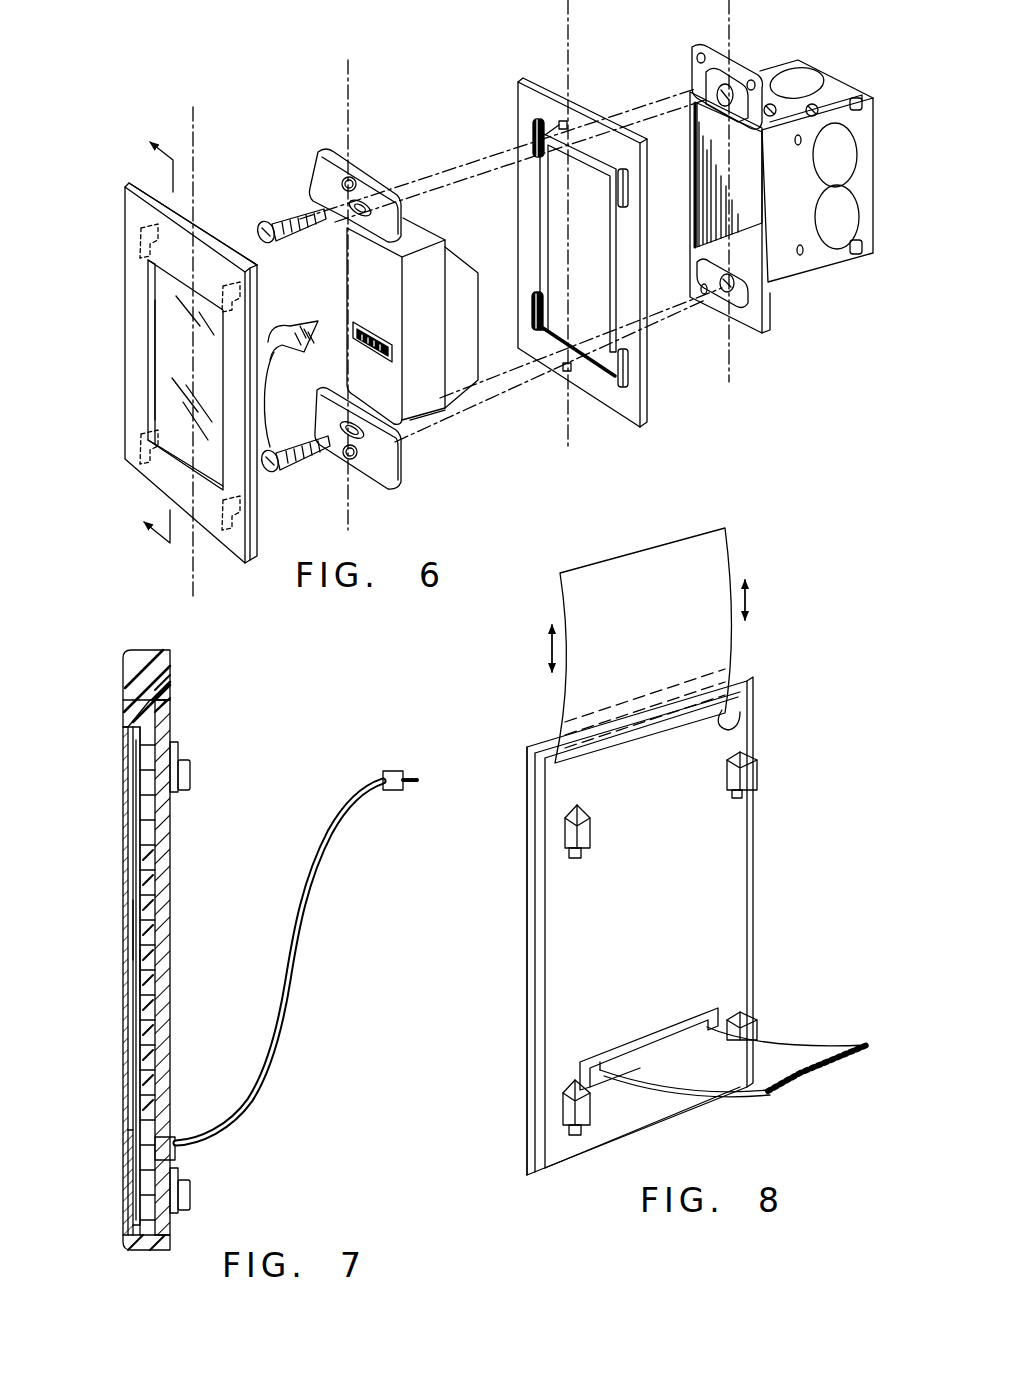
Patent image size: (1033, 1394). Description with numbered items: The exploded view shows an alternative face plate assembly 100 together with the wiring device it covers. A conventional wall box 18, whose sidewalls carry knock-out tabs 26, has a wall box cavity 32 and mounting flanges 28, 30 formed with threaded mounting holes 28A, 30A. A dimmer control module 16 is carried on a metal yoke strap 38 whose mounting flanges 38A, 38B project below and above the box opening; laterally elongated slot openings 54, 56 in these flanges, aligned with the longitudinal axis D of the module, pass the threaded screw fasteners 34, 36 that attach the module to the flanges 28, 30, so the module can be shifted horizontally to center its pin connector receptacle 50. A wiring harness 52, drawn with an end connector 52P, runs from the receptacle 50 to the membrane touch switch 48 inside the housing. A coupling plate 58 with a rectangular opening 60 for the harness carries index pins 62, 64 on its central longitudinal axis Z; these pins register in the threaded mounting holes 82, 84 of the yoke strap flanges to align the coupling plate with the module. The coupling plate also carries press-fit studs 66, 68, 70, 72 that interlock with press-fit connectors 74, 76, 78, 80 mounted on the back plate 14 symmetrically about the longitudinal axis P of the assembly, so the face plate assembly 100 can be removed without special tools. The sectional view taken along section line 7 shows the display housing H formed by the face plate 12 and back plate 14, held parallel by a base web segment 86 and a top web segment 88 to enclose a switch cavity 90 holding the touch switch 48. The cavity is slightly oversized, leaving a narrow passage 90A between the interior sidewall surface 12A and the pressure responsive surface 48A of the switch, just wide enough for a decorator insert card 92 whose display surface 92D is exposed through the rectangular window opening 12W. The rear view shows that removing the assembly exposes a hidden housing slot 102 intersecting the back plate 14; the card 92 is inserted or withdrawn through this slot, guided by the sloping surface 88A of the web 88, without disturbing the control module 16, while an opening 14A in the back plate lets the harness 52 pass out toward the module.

In FIG. 6, the face plate assembly 100 is at (110, 158).
In FIG. 7, the face plate assembly 100 is at (121, 638).
In FIG. 6, the section line 7 is at (149, 336).
In FIG. 6, the longitudinal axis P is at (194, 112).
In FIG. 6, the longitudinal axis D is at (349, 74).
In FIG. 6, the central longitudinal axis Z is at (569, 18).
In FIG. 7, the display housing H is at (122, 674).
In FIG. 6, the face plate 12 is at (139, 262).
In FIG. 7, the face plate 12 is at (122, 744).
In FIG. 8, the face plate 12 is at (529, 842).
In FIG. 6, the rectangular window opening 12W is at (150, 308).
In FIG. 7, the rectangular window opening 12W is at (128, 784).
In FIG. 7, the interior sidewall surface 12A is at (135, 1050).
In FIG. 6, the back plate 14 is at (208, 231).
In FIG. 7, the back plate 14 is at (168, 950).
In FIG. 8, the back plate 14 is at (720, 842).
In FIG. 8, the slot in back plate 14A is at (663, 1042).
In FIG. 6, the dimmer control module 16 is at (452, 242).
In FIG. 6, the wall box 18 is at (832, 72).
In FIG. 6, the knock-out tabs 26 is at (844, 147).
In FIG. 6, the mounting flange 28 is at (738, 306).
In FIG. 6, the threaded mounting hole 28A is at (705, 288).
In FIG. 6, the mounting flange 30 is at (732, 106).
In FIG. 6, the threaded mounting hole 30A is at (694, 86).
In FIG. 6, the wall box cavity 32 is at (752, 184).
In FIG. 6, the threaded screw fastener 34 is at (290, 460).
In FIG. 6, the threaded screw fastener 36 is at (282, 234).
In FIG. 6, the yoke strap 38 is at (359, 402).
In FIG. 6, the mounting flange 38A is at (398, 470).
In FIG. 6, the mounting flange 38B is at (318, 174).
In FIG. 7, the touch switch 48 is at (150, 858).
In FIG. 7, the pressure responsive surface 48A is at (143, 898).
In FIG. 6, the pin connector receptacle 50 is at (382, 310).
In FIG. 6, the wiring harness 52 is at (286, 322).
In FIG. 7, the wiring harness 52 is at (297, 950).
In FIG. 8, the wiring harness 52 is at (806, 1042).
In FIG. 7, the cable plug 52P is at (394, 770).
In FIG. 6, the slot opening 54 is at (386, 446).
In FIG. 6, the slot opening 56 is at (378, 215).
In FIG. 6, the coupling plate 58 is at (540, 80).
In FIG. 6, the rectangular opening 60 is at (605, 245).
In FIG. 6, the index pin 62 is at (568, 372).
In FIG. 6, the index pin 64 is at (566, 126).
In FIG. 6, the press-fit stud 66 is at (630, 366).
In FIG. 6, the press-fit stud 68 is at (534, 310).
In FIG. 6, the press-fit stud 70 is at (520, 136).
In FIG. 6, the press-fit stud 72 is at (630, 188).
In FIG. 6, the press-fit connector 74 is at (140, 236).
In FIG. 7, the press-fit connector 74 is at (181, 750).
In FIG. 8, the press-fit connector 74 is at (740, 783).
In FIG. 6, the press-fit connector 76 is at (140, 458).
In FIG. 7, the press-fit connector 76 is at (181, 1172).
In FIG. 8, the press-fit connector 76 is at (750, 1028).
In FIG. 6, the press-fit connector 78 is at (232, 536).
In FIG. 8, the press-fit connector 78 is at (590, 1110).
In FIG. 6, the press-fit connector 80 is at (246, 291).
In FIG. 8, the press-fit connector 80 is at (576, 812).
In FIG. 6, the threaded mounting hole 82 is at (352, 456).
In FIG. 6, the threaded mounting hole 84 is at (350, 180).
In FIG. 7, the base web segment 86 is at (132, 1250).
In FIG. 7, the top web segment 88 is at (139, 650).
In FIG. 8, the top web segment 88 is at (548, 744).
In FIG. 7, the sloping surface 88A is at (128, 700).
In FIG. 7, the switch cavity 90 is at (152, 712).
In FIG. 7, the narrow passage 90A is at (142, 970).
In FIG. 6, the decorator insert card 92 is at (194, 363).
In FIG. 7, the decorator insert card 92 is at (122, 814).
In FIG. 8, the decorator insert card 92 is at (730, 548).
In FIG. 6, the display surface 92D is at (162, 406).
In FIG. 7, the display surface 92D is at (134, 938).
In FIG. 7, the hidden housing slot 102 is at (162, 690).
In FIG. 8, the hidden housing slot 102 is at (726, 724).